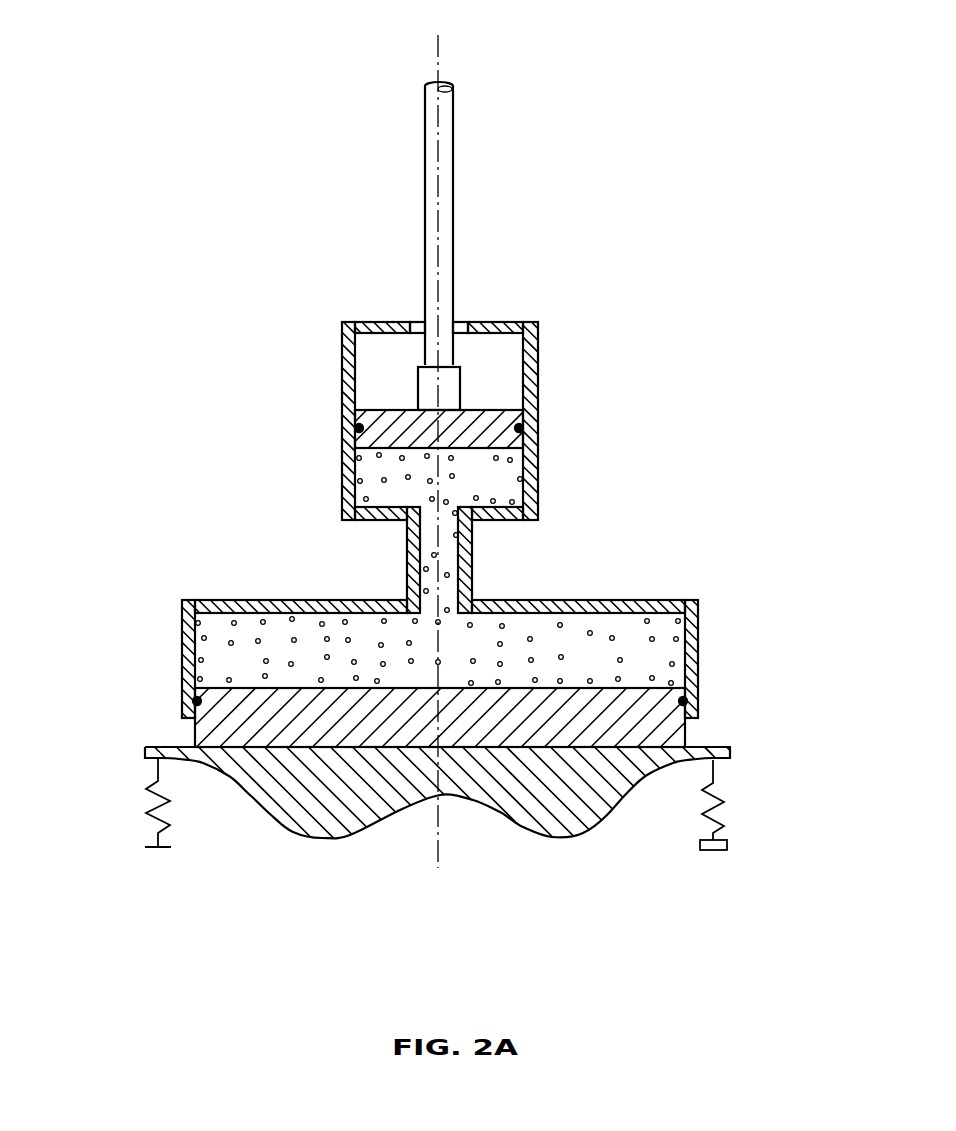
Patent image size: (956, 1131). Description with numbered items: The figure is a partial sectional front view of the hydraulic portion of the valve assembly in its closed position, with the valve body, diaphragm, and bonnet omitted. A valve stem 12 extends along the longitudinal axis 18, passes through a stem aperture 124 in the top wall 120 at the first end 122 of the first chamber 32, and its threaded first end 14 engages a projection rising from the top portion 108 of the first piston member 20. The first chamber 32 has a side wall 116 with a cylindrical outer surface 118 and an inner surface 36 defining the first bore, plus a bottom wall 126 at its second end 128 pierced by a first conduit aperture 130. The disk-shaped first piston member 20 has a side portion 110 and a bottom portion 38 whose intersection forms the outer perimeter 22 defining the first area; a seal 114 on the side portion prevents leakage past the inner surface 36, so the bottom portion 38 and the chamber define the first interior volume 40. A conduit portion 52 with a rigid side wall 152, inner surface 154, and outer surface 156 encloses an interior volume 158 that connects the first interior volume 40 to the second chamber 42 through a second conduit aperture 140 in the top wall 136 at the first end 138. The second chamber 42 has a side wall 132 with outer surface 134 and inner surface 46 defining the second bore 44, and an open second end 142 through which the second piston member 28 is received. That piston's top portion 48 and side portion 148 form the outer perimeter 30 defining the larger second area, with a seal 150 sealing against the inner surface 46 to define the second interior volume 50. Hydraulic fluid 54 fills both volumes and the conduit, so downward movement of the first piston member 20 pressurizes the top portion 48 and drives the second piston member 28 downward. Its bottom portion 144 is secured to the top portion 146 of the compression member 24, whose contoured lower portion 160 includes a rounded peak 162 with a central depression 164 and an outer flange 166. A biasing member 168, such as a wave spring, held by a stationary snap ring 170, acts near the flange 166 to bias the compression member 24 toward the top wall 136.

The valve stem 12 is at (454, 145).
The first end of the valve stem 14 is at (418, 368).
The longitudinal axis 18 is at (439, 66).
The first piston member 20 is at (527, 418).
The outer perimeter of the first piston member 22 is at (357, 457).
The compression member 24 is at (570, 830).
The second piston member 28 is at (660, 723).
The outer perimeter of the second piston member 30 is at (688, 680).
The first chamber 32 is at (352, 343).
The inner surface of the first chamber 36 is at (372, 345).
The bottom portion of the first piston member 38 is at (537, 472).
The first interior volume 40 is at (408, 478).
The second chamber 42 is at (182, 625).
The second bore 44 is at (208, 663).
The inner surface of the second chamber 46 is at (182, 613).
The top portion of the second piston member 48 is at (272, 688).
The second interior volume 50 is at (252, 659).
The conduit portion 52 is at (407, 551).
The hydraulic fluid 54 is at (602, 649).
The top portion of the first piston member 108 is at (527, 398).
The side portion of the first piston member 110 is at (355, 426).
The seal 114 is at (524, 427).
The side wall of the first chamber 116 is at (538, 443).
The outer surface of the first chamber side wall 118 is at (540, 352).
The top wall of the first chamber 120 is at (482, 322).
The first end of the first chamber 122 is at (538, 328).
The stem aperture 124 is at (461, 322).
The bottom wall of the first chamber 126 is at (358, 520).
The second end of the first chamber 128 is at (462, 508).
The first conduit aperture 130 is at (522, 528).
The side wall of the second chamber 132 is at (698, 622).
The outer surface of the second chamber side wall 134 is at (698, 640).
The top wall of the second chamber 136 is at (630, 600).
The first end of the second chamber 138 is at (698, 603).
The second conduit aperture 140 is at (412, 617).
The second end of the second chamber 142 is at (190, 700).
The bottom portion of the second piston member 144 is at (627, 790).
The top portion of the compression member 146 is at (508, 747).
The side portion of the second piston member 148 is at (185, 734).
The seal 150 is at (186, 711).
The side wall of the conduit portion 152 is at (472, 576).
The inner surface of the conduit side wall 154 is at (466, 560).
The outer surface of the conduit side wall 156 is at (407, 575).
The interior volume of the conduit portion 158 is at (430, 526).
The lower portion of the compression member 160 is at (287, 820).
The rounded peak 162 is at (320, 840).
The central depression 164 is at (395, 805).
The flange 166 is at (730, 752).
The biasing member 168 is at (150, 798).
The snap ring 170 is at (727, 845).